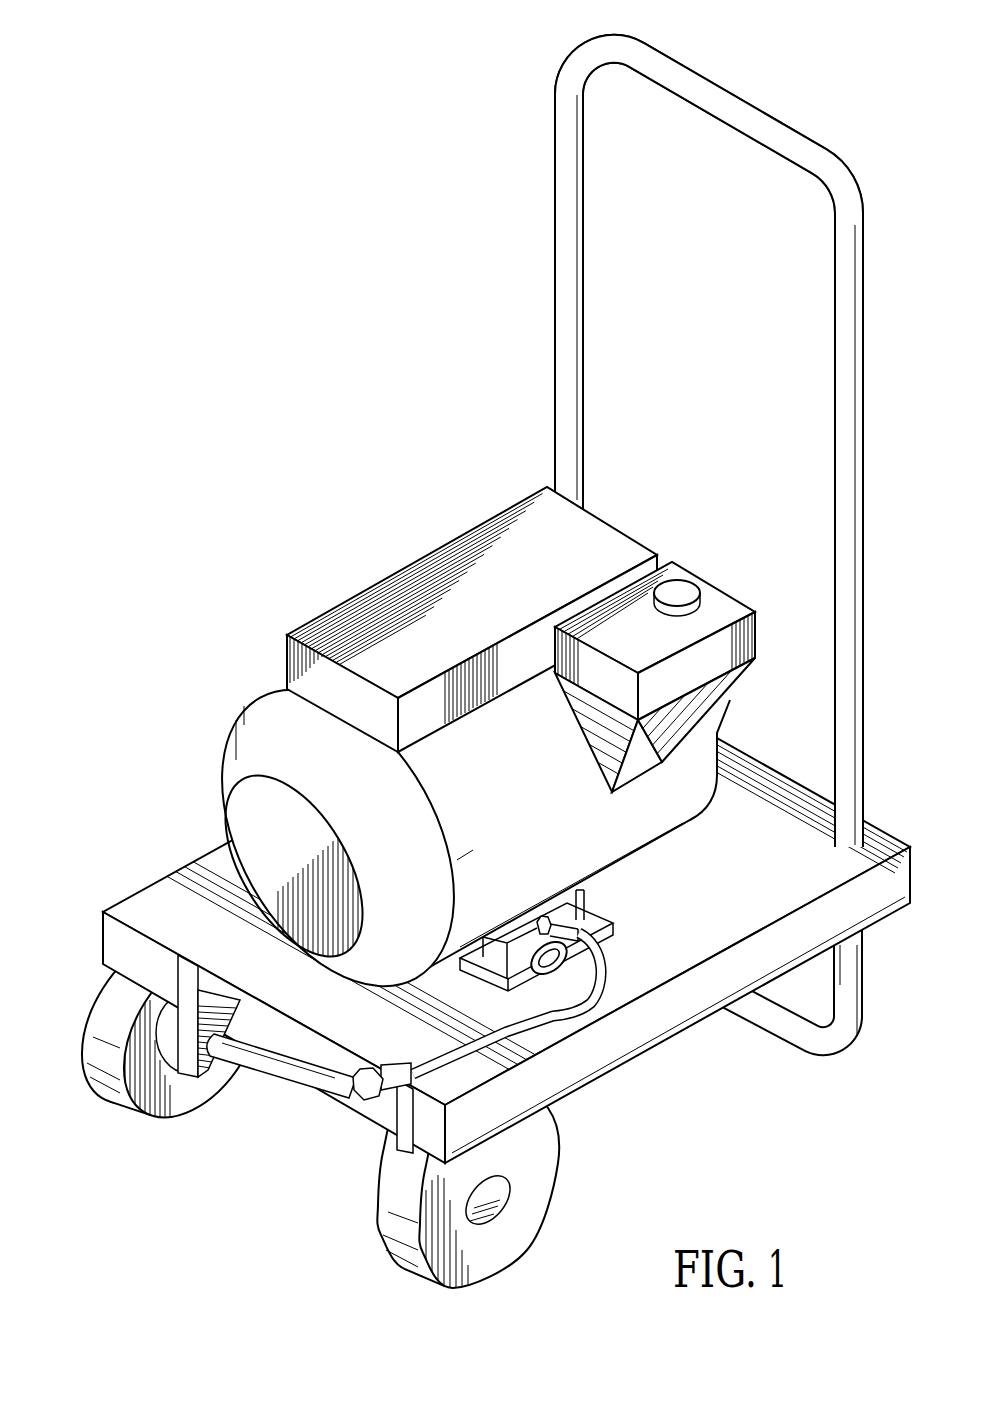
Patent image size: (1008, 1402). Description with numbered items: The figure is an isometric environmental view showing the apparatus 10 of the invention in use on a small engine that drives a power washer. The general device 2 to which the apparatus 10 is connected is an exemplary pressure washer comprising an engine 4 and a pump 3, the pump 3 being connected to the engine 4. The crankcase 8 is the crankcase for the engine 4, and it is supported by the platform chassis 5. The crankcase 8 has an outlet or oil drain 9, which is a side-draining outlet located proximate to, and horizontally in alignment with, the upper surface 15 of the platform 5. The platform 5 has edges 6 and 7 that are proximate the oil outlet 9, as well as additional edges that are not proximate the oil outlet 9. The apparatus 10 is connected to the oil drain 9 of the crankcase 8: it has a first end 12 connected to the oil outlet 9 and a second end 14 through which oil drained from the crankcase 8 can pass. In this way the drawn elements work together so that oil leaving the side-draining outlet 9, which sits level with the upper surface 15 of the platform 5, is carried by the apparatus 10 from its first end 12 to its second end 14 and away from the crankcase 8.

The general device 2 is at (358, 478).
The pump 3 is at (718, 800).
The engine 4 is at (252, 746).
The platform chassis 5 is at (141, 887).
The edge 6 is at (316, 1060).
The edge 7 is at (686, 998).
The crankcase 8 is at (590, 892).
The oil drain 9 is at (541, 921).
The apparatus 10 is at (594, 1024).
The first end 12 is at (565, 909).
The second end 14 is at (360, 1068).
The upper surface 15 is at (781, 823).